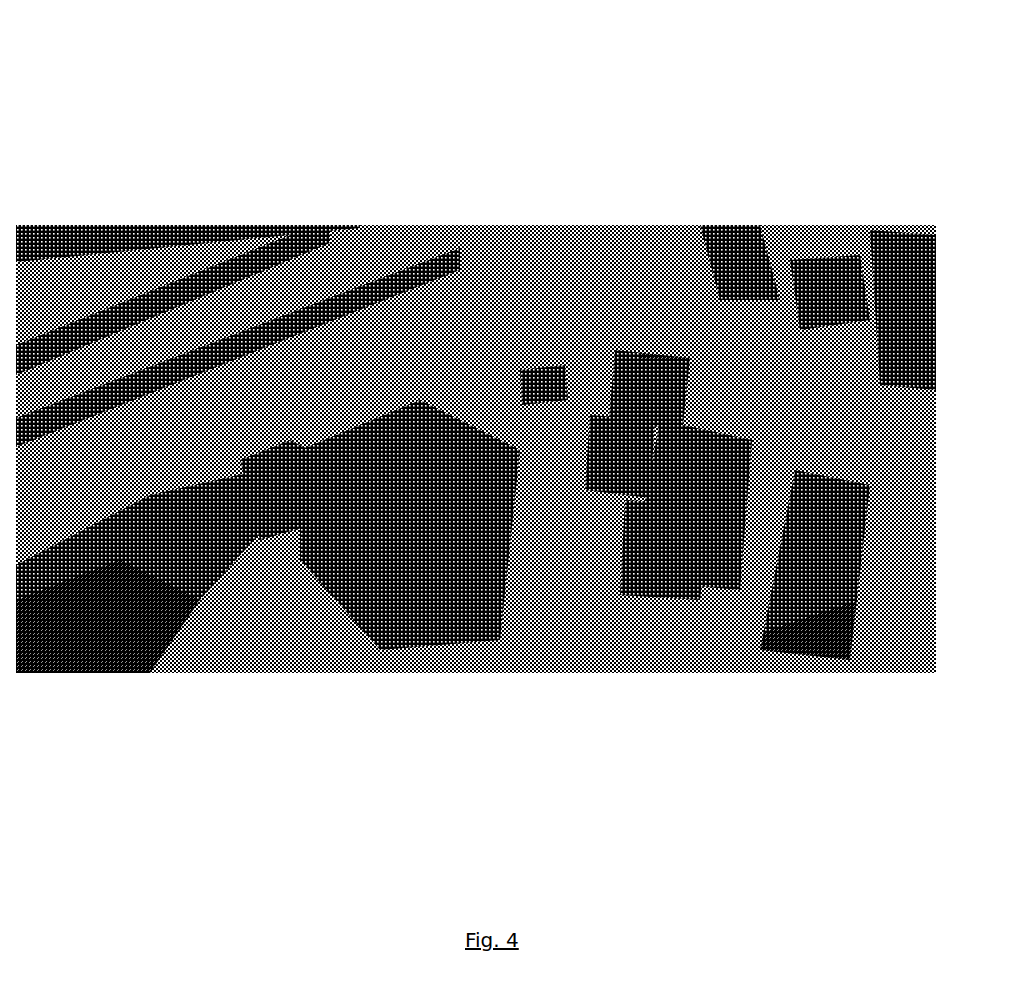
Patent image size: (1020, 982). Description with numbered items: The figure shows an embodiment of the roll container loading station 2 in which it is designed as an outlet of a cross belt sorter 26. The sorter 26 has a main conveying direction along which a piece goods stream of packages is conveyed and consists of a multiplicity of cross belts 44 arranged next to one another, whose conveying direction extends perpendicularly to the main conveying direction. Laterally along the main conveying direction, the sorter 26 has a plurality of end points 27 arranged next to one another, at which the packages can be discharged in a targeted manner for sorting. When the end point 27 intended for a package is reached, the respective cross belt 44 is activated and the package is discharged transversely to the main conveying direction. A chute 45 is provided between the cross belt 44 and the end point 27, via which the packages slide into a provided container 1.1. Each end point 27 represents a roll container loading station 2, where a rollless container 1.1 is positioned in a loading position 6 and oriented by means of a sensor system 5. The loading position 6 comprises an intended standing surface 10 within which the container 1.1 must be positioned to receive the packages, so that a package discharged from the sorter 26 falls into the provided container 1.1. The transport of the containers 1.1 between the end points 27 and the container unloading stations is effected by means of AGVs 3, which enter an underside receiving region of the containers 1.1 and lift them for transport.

The cross belt sorter 26 is at (365, 148).
The roll container loading station 2 is at (343, 380).
The end point 27 is at (400, 345).
The chute 45 is at (57, 500).
The cross belt 44 is at (470, 262).
The loading position 6 is at (292, 640).
The standing surface 10 is at (295, 602).
The sensor system 5 is at (280, 463).
The AGV 3 is at (792, 302).
The container 1.1 is at (378, 478).